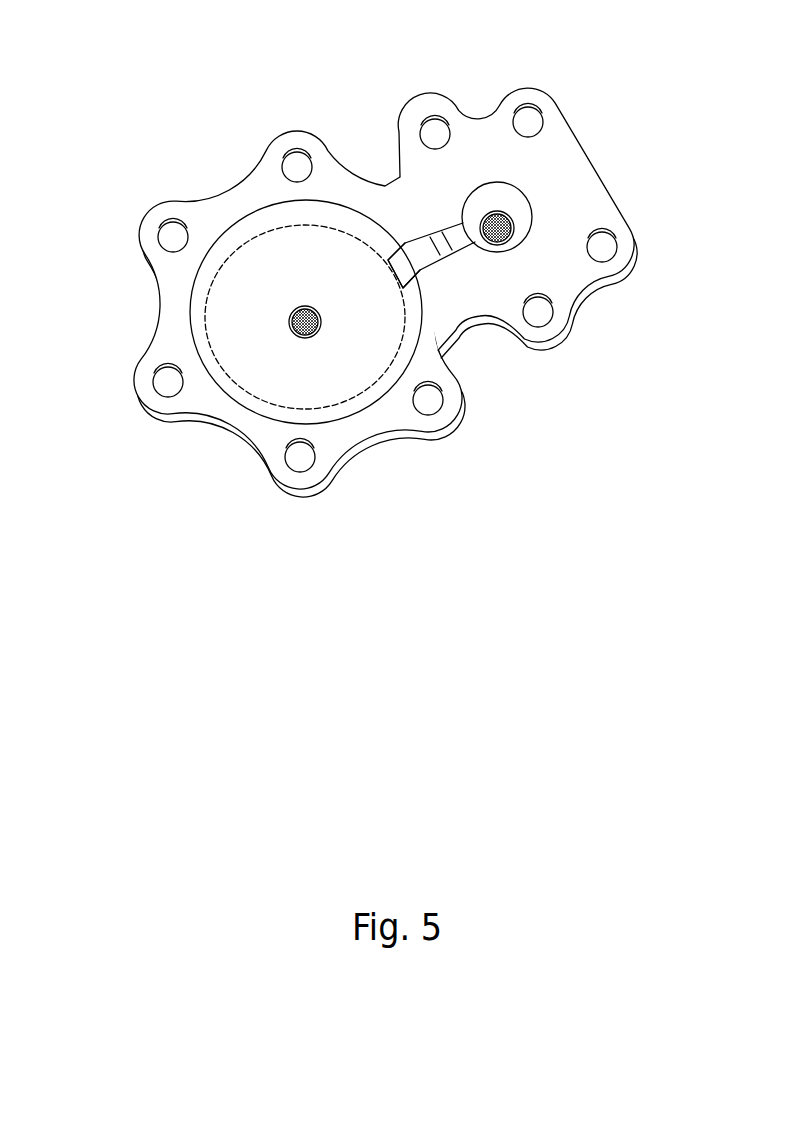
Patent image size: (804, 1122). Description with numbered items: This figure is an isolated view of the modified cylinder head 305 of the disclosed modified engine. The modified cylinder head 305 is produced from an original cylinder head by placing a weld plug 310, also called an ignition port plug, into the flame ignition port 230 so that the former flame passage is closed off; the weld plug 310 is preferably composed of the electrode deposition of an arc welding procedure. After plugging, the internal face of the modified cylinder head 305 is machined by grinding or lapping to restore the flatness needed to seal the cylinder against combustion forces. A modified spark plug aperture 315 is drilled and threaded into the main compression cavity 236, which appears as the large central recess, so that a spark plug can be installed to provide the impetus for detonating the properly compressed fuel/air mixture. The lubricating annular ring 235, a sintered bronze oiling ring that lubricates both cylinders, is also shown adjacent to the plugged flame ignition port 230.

The modified cylinder head 305 is at (170, 102).
The main compression cavity 236 is at (245, 324).
The lubricating annular ring 235 is at (512, 226).
The flame ignition port 230 is at (453, 243).
The weld plug 310 is at (428, 263).
The modified spark plug aperture 315 is at (315, 335).